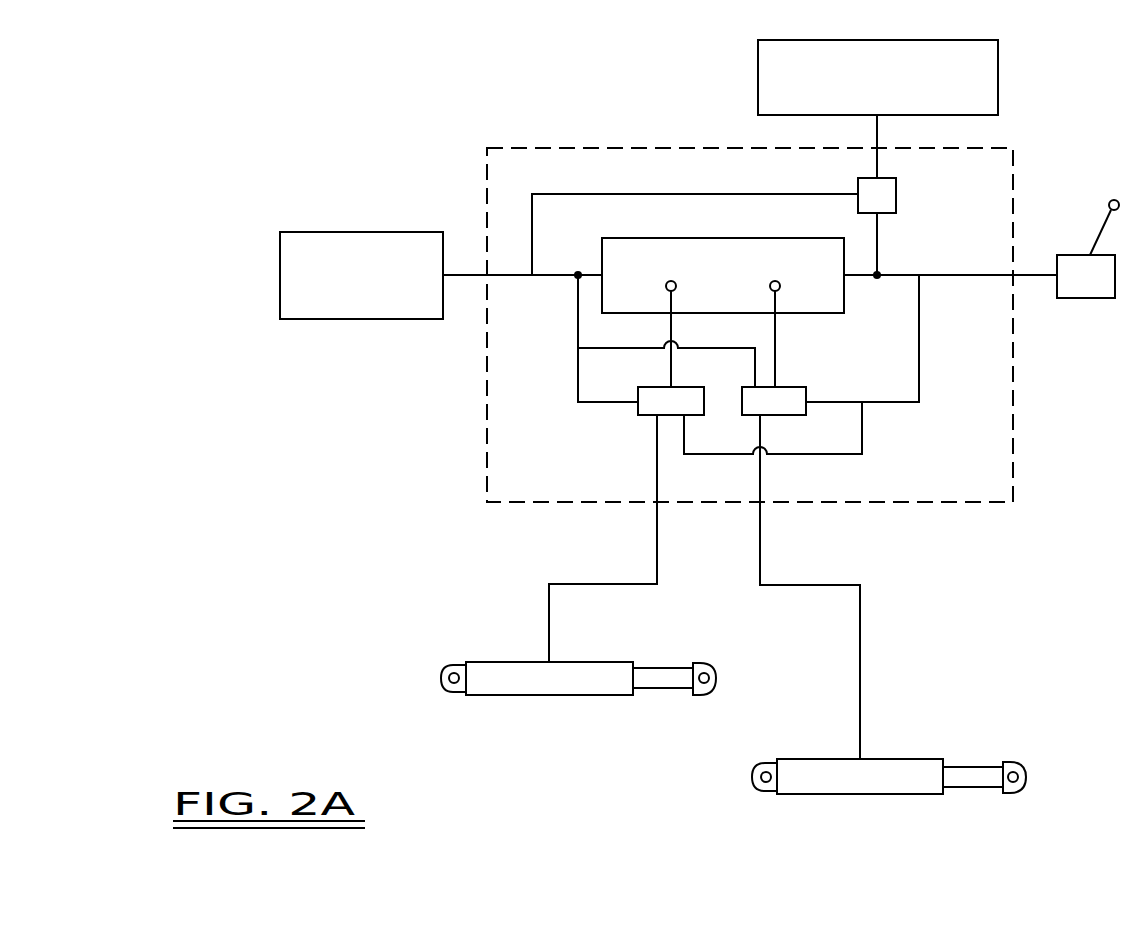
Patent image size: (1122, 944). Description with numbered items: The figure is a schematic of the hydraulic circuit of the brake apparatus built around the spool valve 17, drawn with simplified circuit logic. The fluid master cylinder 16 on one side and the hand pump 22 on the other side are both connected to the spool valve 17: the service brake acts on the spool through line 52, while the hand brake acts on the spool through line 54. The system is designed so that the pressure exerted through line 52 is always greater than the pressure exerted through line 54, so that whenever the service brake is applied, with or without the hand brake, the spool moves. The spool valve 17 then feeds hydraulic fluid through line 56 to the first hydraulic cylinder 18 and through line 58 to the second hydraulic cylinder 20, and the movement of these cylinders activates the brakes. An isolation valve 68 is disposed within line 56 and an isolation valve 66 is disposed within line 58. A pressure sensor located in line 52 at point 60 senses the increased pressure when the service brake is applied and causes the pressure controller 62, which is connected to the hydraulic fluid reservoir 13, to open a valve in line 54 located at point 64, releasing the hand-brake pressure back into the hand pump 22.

The hydraulic fluid reservoir 13 is at (893, 94).
The fluid master cylinder 16 is at (380, 291).
The spool valve 17 is at (735, 294).
The first hydraulic cylinder 18 is at (812, 795).
The second hydraulic cylinder 20 is at (565, 697).
The hand pump 22 is at (1102, 290).
The line 52 is at (463, 275).
The line 54 is at (1033, 275).
The line 56 is at (795, 585).
The line 58 is at (615, 584).
The point 60 is at (578, 275).
The pressure controller 62 is at (896, 198).
The point 64 is at (877, 275).
The isolation valve 66 is at (653, 405).
The isolation valve 68 is at (780, 403).